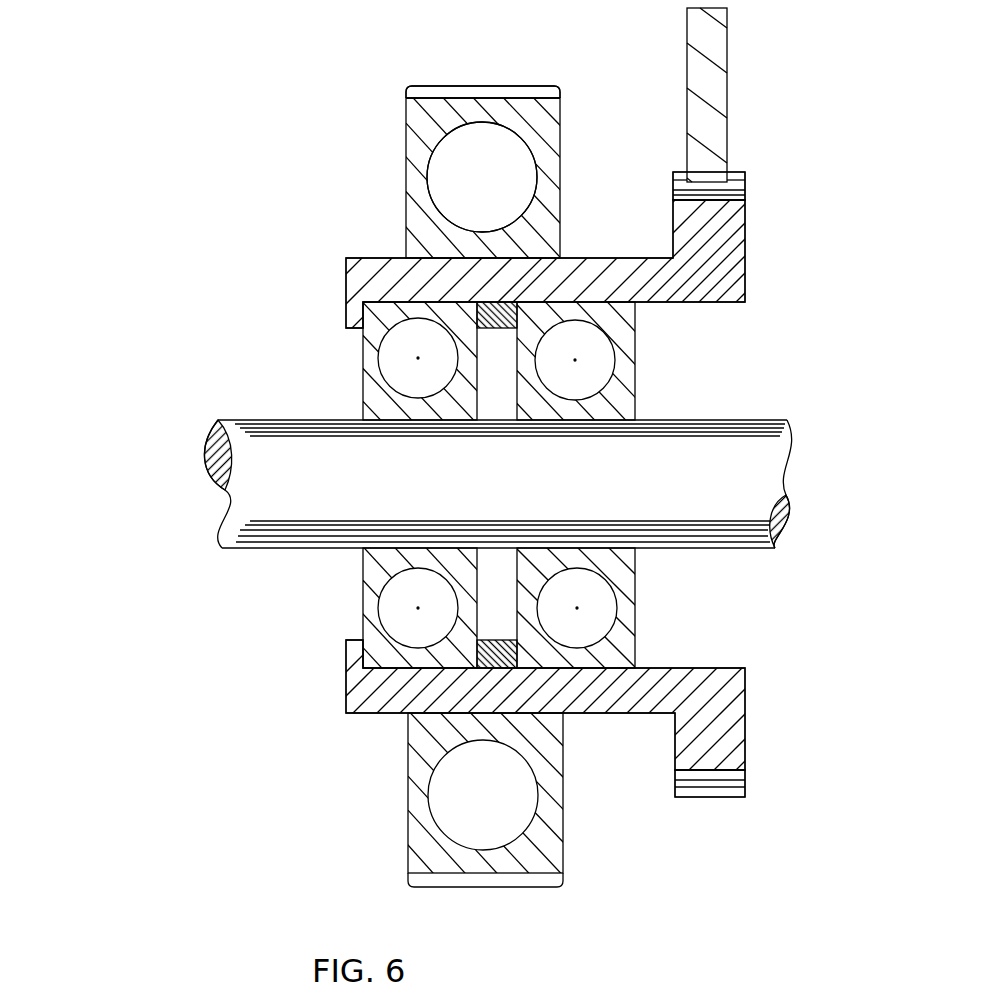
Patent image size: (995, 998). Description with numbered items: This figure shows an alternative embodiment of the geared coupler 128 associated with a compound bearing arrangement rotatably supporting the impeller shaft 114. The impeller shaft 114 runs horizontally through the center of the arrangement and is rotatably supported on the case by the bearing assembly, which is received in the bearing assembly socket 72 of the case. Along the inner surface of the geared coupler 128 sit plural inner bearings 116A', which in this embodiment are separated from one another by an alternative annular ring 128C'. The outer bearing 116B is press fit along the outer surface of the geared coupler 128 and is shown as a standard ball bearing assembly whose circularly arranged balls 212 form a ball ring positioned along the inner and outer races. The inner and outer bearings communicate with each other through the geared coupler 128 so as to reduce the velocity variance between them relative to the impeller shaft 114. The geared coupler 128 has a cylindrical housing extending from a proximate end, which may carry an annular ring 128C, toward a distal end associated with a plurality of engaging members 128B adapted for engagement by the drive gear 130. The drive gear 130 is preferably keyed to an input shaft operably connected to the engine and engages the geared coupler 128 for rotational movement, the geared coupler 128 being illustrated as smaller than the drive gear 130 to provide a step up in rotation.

The bearing assembly socket 72 is at (407, 108).
The balls 212 is at (450, 172).
The outer bearing 116B is at (537, 120).
The drive gear 130 is at (727, 57).
The alternative annular ring 128C' is at (359, 510).
The annular ring 128C is at (539, 485).
The inner bearings 116A' is at (506, 485).
The impeller shaft 114 is at (243, 495).
The geared coupler 128 is at (768, 690).
The engaging members 128B is at (738, 797).